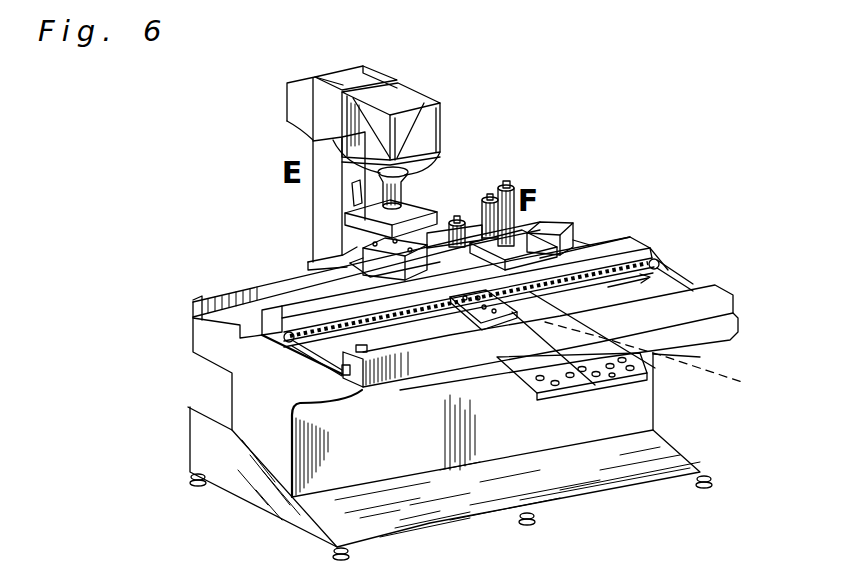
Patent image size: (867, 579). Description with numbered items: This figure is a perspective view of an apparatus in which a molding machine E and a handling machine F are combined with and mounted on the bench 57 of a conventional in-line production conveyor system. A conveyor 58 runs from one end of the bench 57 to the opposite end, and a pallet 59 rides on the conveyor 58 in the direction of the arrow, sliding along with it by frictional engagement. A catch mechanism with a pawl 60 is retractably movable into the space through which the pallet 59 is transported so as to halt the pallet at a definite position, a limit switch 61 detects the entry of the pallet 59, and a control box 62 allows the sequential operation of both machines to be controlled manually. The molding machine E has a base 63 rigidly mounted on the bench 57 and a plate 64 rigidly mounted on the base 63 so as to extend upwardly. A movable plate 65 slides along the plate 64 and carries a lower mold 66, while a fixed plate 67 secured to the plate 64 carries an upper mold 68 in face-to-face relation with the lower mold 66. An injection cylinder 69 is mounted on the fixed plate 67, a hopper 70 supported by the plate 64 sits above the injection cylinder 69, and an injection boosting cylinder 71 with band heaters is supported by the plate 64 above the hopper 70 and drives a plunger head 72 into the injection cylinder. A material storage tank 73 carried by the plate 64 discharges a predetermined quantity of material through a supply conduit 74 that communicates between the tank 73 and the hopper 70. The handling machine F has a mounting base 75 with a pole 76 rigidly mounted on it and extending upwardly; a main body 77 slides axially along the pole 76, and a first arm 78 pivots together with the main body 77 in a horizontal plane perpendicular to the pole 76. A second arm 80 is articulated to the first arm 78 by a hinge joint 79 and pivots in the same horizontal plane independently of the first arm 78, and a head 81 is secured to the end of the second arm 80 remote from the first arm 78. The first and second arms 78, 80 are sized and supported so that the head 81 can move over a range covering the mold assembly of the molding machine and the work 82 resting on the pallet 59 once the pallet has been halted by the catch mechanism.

The bench 57 is at (203, 337).
The conveyor 58 is at (655, 250).
The pallet 59 is at (650, 372).
The pawl 60 is at (667, 359).
The limit switch 61 is at (361, 352).
The control box 62 is at (595, 385).
The base 63 is at (355, 278).
The plate 64 is at (322, 200).
The movable plate 65 is at (437, 294).
The lower mold 66 is at (312, 235).
The fixed plate 67 is at (415, 238).
The upper mold 68 is at (470, 232).
The injection cylinder 69 is at (437, 220).
The hopper 70 is at (396, 196).
The injection boosting cylinder 71 is at (406, 108).
The plunger head 72 is at (394, 164).
The material storage tank 73 is at (293, 102).
The supply conduit 74 is at (313, 140).
The mounting base 75 is at (545, 222).
The pole 76 is at (540, 213).
The main body 77 is at (575, 235).
The first arm 78 is at (516, 200).
The hinge joint 79 is at (507, 184).
The second arm 80 is at (600, 320).
The head 81 is at (459, 218).
The work 82 is at (473, 307).